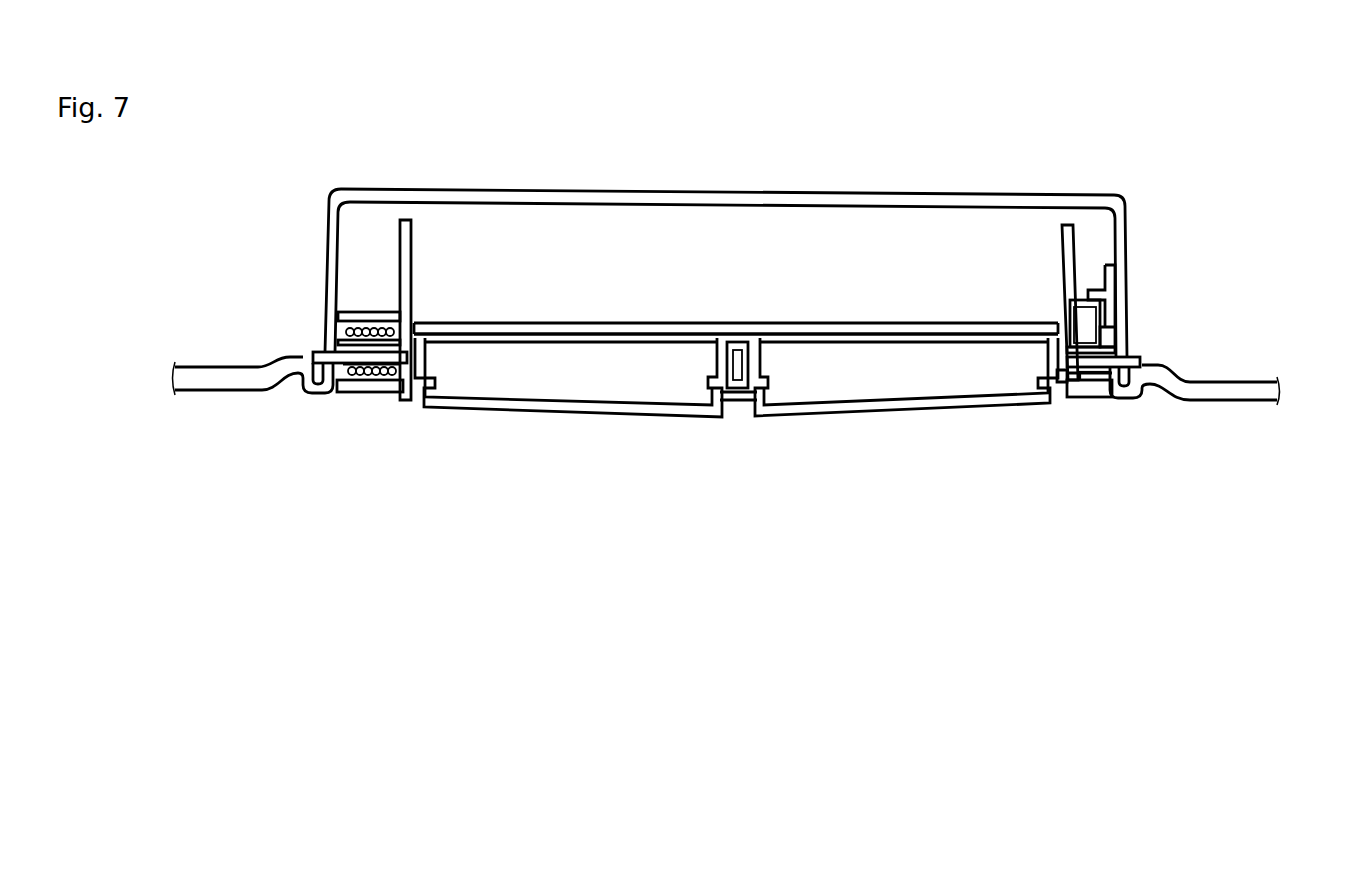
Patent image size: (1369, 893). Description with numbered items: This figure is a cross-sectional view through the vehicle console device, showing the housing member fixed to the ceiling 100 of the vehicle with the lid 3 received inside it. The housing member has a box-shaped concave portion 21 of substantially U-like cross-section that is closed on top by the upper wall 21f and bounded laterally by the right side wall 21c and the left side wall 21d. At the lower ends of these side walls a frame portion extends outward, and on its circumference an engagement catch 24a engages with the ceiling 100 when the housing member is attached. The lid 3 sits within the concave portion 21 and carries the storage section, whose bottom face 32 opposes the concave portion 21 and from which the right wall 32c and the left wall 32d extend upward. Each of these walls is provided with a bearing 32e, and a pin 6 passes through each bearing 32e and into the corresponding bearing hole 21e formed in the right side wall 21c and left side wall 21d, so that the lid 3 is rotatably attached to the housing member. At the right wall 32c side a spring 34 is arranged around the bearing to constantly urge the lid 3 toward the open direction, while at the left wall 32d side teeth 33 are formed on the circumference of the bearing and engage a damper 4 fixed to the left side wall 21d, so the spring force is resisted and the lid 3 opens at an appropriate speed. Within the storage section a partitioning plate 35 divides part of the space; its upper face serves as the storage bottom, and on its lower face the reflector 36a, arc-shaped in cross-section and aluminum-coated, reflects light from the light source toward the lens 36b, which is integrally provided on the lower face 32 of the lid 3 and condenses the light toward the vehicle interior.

The lid 3 is at (1063, 393).
The damper 4 is at (1113, 275).
The pin 6 is at (352, 386).
The concave portion 21 is at (730, 240).
The right side wall 21c is at (330, 218).
The left side wall 21d is at (1128, 232).
The bearing hole 21e is at (325, 344).
The upper wall 21f is at (985, 210).
The engagement catch 24a is at (305, 394).
The bottom face 32 is at (750, 309).
The right wall 32c is at (400, 240).
The left wall 32d is at (1068, 245).
The bearing 32e is at (369, 386).
The teeth 33 is at (1105, 333).
The spring 34 is at (365, 320).
The partitioning plate 35 is at (688, 336).
The reflector 36a is at (630, 344).
The lens 36b is at (736, 415).
The ceiling 100 is at (726, 416).